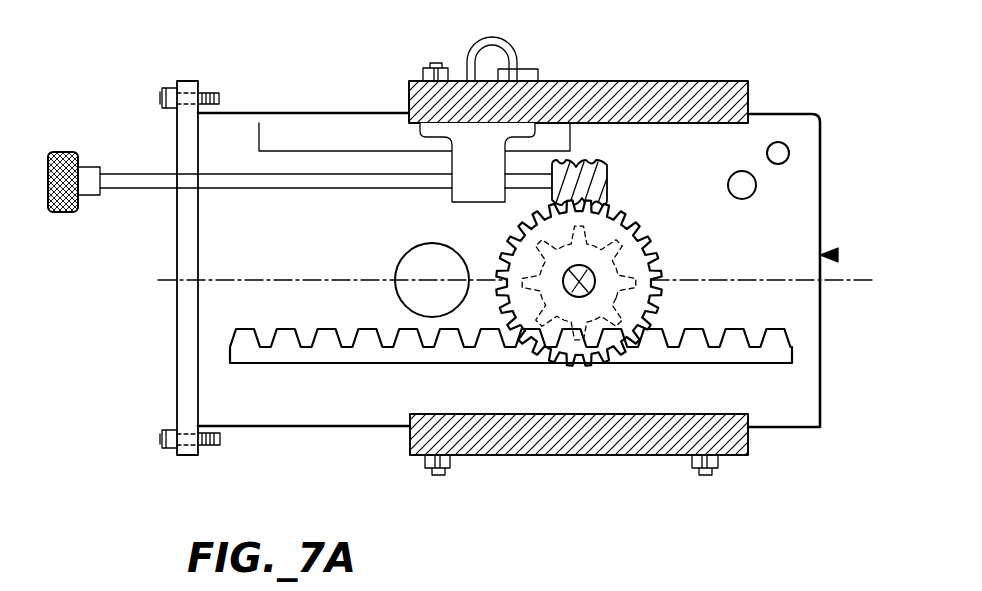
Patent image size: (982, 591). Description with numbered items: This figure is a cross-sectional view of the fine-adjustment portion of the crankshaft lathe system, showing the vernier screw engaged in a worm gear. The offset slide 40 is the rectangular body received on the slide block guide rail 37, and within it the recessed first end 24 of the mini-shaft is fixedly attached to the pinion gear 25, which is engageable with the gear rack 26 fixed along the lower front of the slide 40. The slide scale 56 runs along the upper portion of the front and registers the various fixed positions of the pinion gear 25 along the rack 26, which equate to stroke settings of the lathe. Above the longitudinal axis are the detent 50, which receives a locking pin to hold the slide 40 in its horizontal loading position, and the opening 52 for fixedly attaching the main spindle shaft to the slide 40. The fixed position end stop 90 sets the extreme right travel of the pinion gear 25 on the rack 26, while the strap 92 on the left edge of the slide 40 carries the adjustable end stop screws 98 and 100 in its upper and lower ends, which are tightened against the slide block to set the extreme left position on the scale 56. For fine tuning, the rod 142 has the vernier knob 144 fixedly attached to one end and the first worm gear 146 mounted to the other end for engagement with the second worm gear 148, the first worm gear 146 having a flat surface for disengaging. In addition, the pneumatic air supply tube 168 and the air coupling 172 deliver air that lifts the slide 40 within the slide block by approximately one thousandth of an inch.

The recessed first end 24 is at (593, 292).
The pinion gear 25 is at (582, 313).
The gear rack 26 is at (780, 352).
The guide rail 37 is at (750, 102).
The offset slide 40 is at (838, 255).
The detent 50 is at (757, 189).
The opening 52 is at (400, 274).
The slide scale 56 is at (312, 122).
The fixed position end stop 90 is at (783, 141).
The strap 92 is at (177, 330).
The adjustable end stop screw 98 is at (210, 90).
The adjustable end stop screw 100 is at (212, 448).
The rod 142 is at (128, 192).
The vernier knob 144 is at (62, 152).
The first worm gear 146 is at (595, 185).
The second worm gear 148 is at (648, 228).
The pneumatic air supply tube 168 is at (492, 35).
The air coupling 172 is at (528, 68).